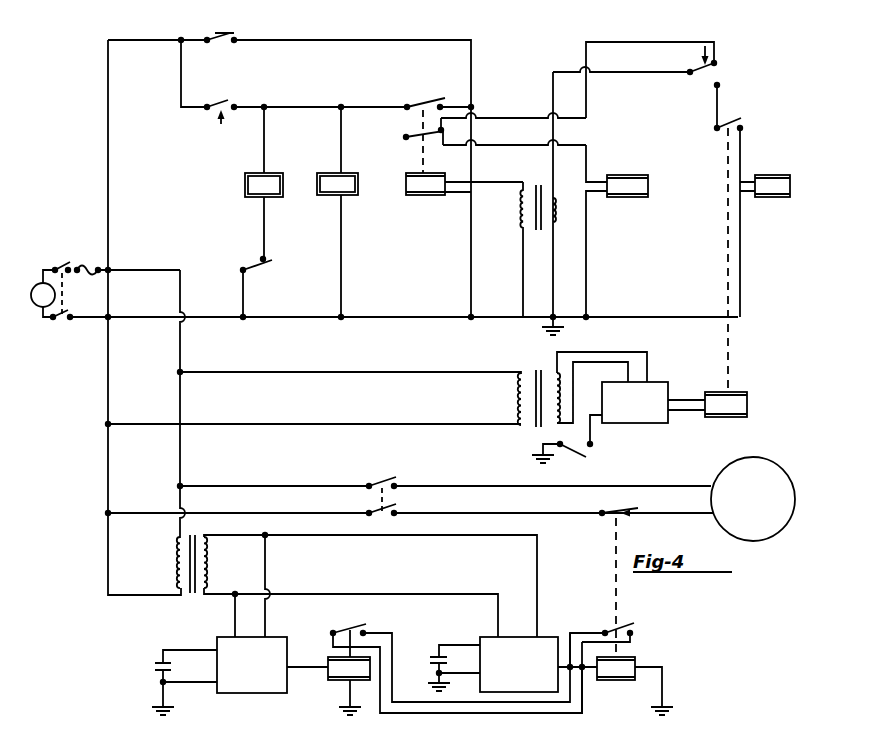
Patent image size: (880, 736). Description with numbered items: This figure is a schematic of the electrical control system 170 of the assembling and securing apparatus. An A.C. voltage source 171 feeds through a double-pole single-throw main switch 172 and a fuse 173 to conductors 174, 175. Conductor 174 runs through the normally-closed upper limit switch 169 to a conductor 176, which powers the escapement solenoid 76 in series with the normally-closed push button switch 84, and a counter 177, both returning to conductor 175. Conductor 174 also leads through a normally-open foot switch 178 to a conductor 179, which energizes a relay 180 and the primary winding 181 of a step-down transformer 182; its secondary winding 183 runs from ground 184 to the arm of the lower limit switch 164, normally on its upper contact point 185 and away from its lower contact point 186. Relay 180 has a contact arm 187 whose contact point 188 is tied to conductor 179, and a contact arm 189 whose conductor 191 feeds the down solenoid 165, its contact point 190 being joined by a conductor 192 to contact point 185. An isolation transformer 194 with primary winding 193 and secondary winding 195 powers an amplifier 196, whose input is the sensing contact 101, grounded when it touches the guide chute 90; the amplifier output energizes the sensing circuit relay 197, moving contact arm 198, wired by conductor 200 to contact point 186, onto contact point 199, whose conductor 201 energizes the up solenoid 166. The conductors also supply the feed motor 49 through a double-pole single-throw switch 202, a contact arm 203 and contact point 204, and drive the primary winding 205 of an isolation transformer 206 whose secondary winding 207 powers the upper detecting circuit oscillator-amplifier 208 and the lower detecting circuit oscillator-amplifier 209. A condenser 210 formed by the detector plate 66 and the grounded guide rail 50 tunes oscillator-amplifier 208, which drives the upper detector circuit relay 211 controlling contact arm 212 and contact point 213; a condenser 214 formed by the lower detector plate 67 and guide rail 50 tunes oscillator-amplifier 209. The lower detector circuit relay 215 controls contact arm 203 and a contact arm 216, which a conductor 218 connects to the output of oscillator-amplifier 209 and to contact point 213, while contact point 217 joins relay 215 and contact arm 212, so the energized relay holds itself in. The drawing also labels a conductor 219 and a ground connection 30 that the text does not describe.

The electrical control system 170 is at (84, 79).
The A.C. voltage source 171 is at (37, 283).
The double-pole single-throw main switch 172 is at (65, 296).
The fuse 173 is at (85, 265).
The conductor 174 is at (107, 272).
The conductor 175 is at (99, 316).
The conductor 176 is at (293, 106).
The counter 177 is at (348, 196).
The normally-open foot switch 178 is at (226, 51).
The conductor 179 is at (338, 46).
The relay 180 is at (420, 196).
The primary winding 181 is at (519, 211).
The step-down transformer 182 is at (533, 176).
The secondary winding 183 is at (557, 209).
The ground 184 is at (566, 336).
The upper contact point 185 is at (724, 64).
The lower contact point 186 is at (720, 86).
The contact arm 187 is at (426, 104).
The contact point 188 is at (444, 101).
The contact arm 189 is at (429, 141).
The contact point 190 is at (438, 129).
The conductor 191 is at (522, 145).
The conductor 192 is at (513, 117).
The primary winding 193 is at (519, 405).
The isolation transformer 194 is at (530, 367).
The secondary winding 195 is at (558, 386).
The amplifier 196 is at (666, 423).
The sensing circuit relay 197 is at (750, 401).
The contact arm 198 is at (732, 122).
The contact point 199 is at (746, 128).
The conductor 200 is at (716, 107).
The conductor 201 is at (744, 155).
The double-pole single-throw switch 202 is at (378, 498).
The contact arm 203 is at (607, 518).
The contact point 204 is at (630, 512).
The primary winding 205 is at (174, 562).
The isolation transformer 206 is at (214, 522).
The secondary winding 207 is at (213, 562).
The upper detecting circuit oscillator-amplifier 208 is at (253, 693).
The lower detecting circuit oscillator-amplifier 209 is at (533, 693).
The upper detector circuit condenser 210 is at (146, 667).
The upper detector circuit relay 211 is at (328, 678).
The contact arm 212 is at (346, 630).
The contact point 213 is at (366, 631).
The condenser 214 is at (424, 660).
The lower detector circuit relay 215 is at (613, 681).
The contact arm 216 is at (621, 626).
The contact point 217 is at (635, 626).
The conductor 218 is at (600, 633).
The conductor 219 is at (585, 704).
The escapement solenoid 76 is at (245, 186).
The normally-closed push button switch 84 is at (243, 264).
The detector plate 66 is at (158, 663).
The lower detector plate 67 is at (436, 655).
The guide rail 50 is at (155, 676).
The guide chute 90 is at (558, 443).
The sensing contact 101 is at (616, 461).
The feed motor 49 is at (766, 458).
The lower limit switch 164 is at (690, 69).
The down solenoid 165 is at (628, 198).
The up solenoid 166 is at (774, 198).
The upper limit switch 169 is at (229, 102).
The ground 30 is at (668, 721).